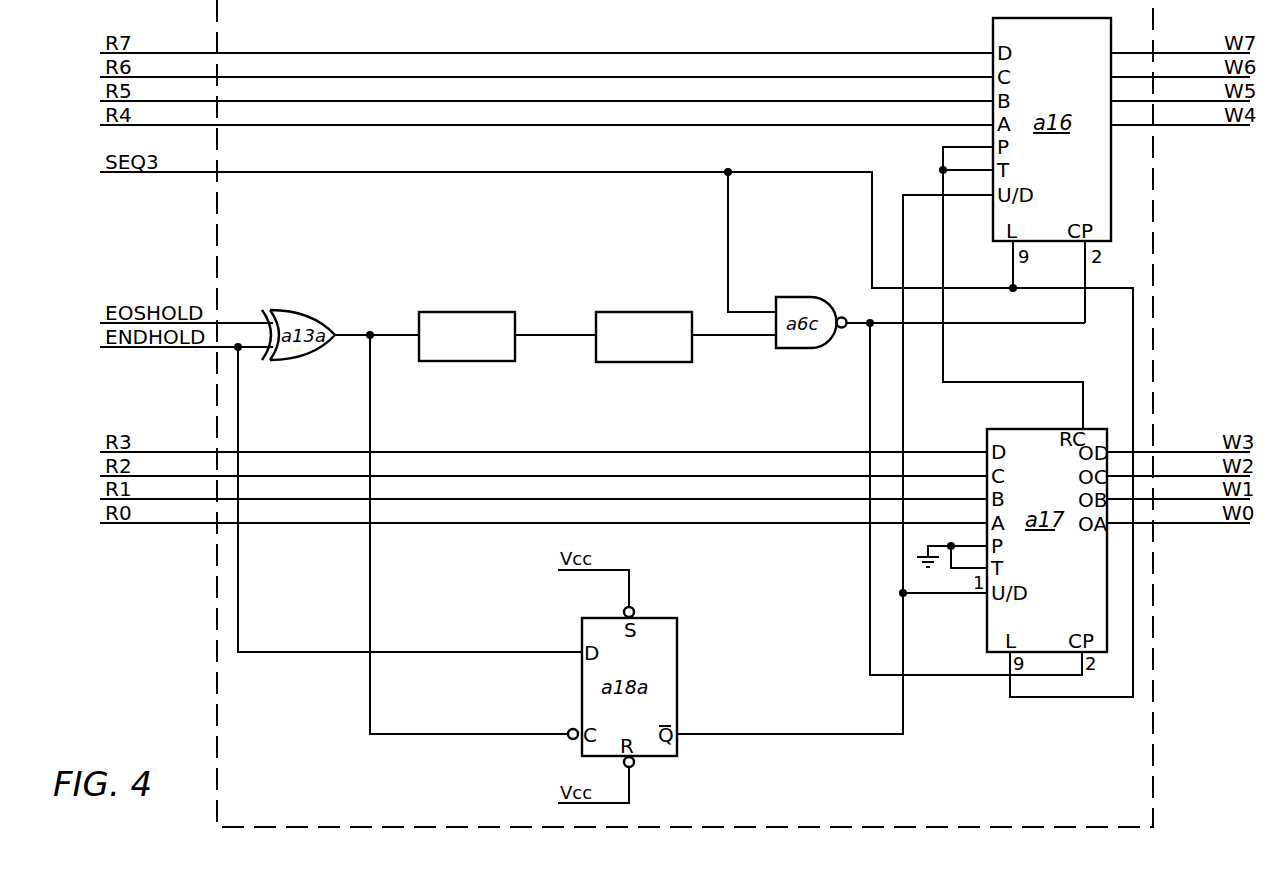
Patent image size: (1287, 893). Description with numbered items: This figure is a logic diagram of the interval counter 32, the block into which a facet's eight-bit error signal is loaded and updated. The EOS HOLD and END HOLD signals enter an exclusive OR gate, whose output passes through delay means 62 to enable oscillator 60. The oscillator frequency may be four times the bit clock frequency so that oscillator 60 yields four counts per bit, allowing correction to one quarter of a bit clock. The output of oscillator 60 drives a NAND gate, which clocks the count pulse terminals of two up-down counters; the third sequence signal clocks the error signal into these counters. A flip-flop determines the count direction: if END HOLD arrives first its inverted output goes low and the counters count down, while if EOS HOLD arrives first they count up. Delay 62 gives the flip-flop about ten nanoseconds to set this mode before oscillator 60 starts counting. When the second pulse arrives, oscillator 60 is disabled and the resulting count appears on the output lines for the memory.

The interval counter 32 is at (1155, 685).
The oscillator 60 is at (641, 313).
The delay means 62 is at (484, 313).